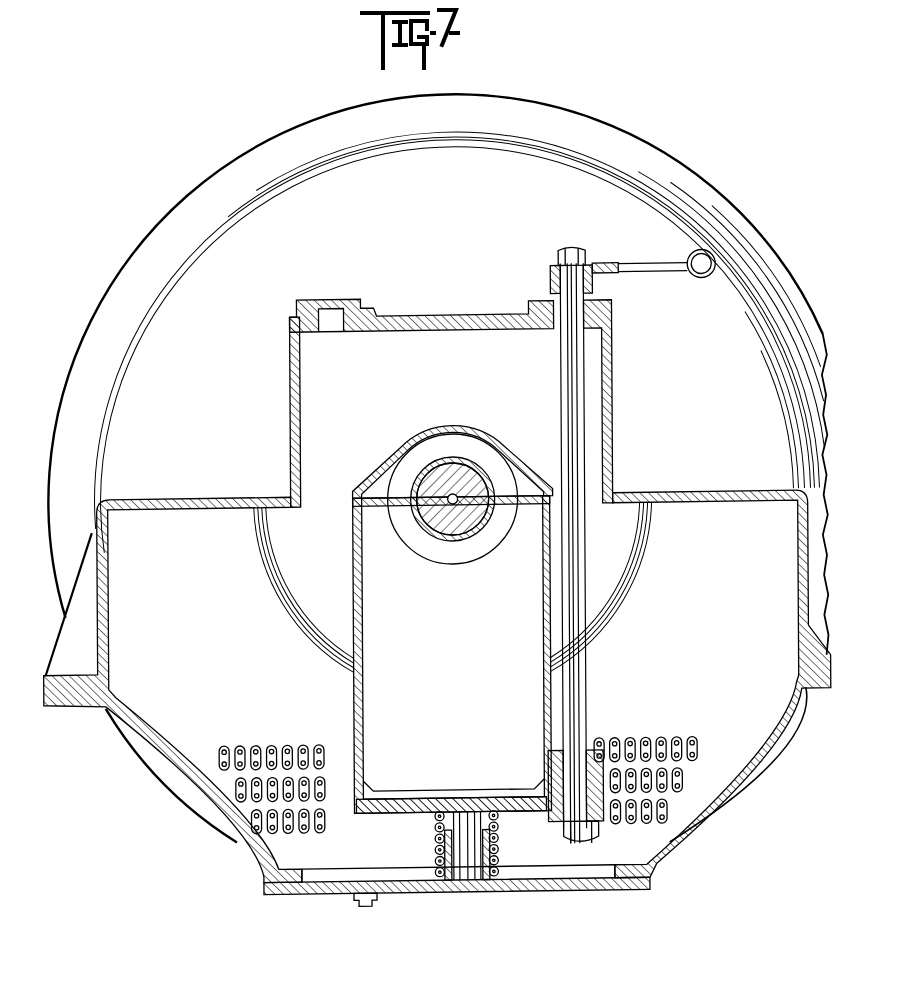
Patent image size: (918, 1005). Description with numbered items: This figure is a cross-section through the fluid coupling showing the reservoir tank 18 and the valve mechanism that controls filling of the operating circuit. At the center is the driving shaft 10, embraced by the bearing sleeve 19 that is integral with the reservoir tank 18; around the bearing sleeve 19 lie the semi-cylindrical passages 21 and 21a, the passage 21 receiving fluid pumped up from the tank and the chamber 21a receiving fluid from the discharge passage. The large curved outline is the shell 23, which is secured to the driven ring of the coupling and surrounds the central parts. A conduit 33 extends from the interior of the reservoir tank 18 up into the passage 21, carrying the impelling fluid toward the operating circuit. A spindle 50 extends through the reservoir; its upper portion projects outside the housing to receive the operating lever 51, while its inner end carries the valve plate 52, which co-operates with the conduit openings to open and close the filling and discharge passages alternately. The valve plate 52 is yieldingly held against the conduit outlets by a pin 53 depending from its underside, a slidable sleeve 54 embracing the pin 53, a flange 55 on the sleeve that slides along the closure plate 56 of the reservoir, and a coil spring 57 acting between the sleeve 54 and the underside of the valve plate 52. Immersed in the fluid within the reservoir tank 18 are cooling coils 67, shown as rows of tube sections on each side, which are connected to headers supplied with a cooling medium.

The driving shaft 10 is at (456, 525).
The reservoir tank 18 is at (437, 688).
The bearing sleeve 19 is at (425, 520).
The semi-cylindrical passage 21 is at (493, 537).
The semi-cylindrical passage 21a is at (445, 443).
The shell 23 is at (225, 233).
The conduit 33 is at (451, 555).
The spindle 50 is at (568, 398).
The lever 51 is at (643, 267).
The valve plate 52 is at (400, 797).
The pin 53 is at (460, 840).
The slidable sleeve 54 is at (496, 848).
The flange 55 is at (430, 877).
The closure plate 56 is at (544, 886).
The coil spring 57 is at (440, 852).
The coils 67 is at (285, 745).